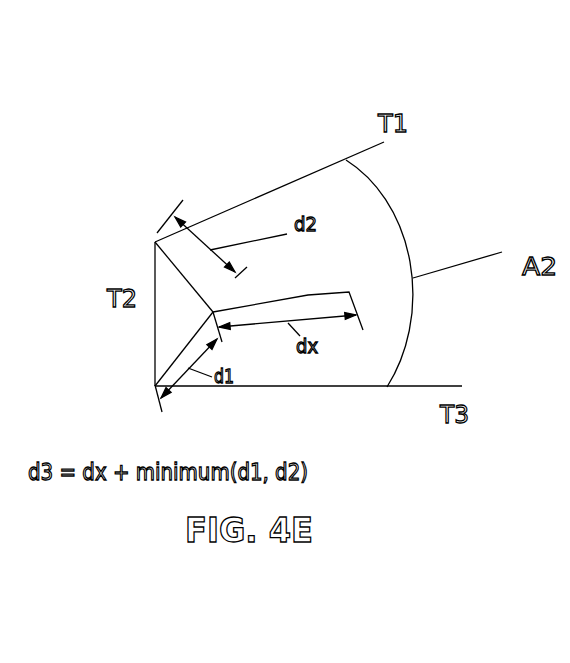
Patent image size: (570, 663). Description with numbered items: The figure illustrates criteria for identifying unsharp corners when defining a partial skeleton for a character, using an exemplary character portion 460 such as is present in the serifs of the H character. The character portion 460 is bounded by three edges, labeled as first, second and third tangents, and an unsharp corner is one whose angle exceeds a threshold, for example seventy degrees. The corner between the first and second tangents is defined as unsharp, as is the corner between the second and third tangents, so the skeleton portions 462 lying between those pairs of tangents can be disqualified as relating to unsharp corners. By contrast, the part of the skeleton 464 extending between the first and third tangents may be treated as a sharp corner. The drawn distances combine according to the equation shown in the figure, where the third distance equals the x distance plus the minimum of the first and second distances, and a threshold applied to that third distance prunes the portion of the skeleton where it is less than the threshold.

The character portion 460 is at (247, 185).
The skeleton portions 462 is at (187, 287).
The part of the skeleton 464 is at (308, 295).